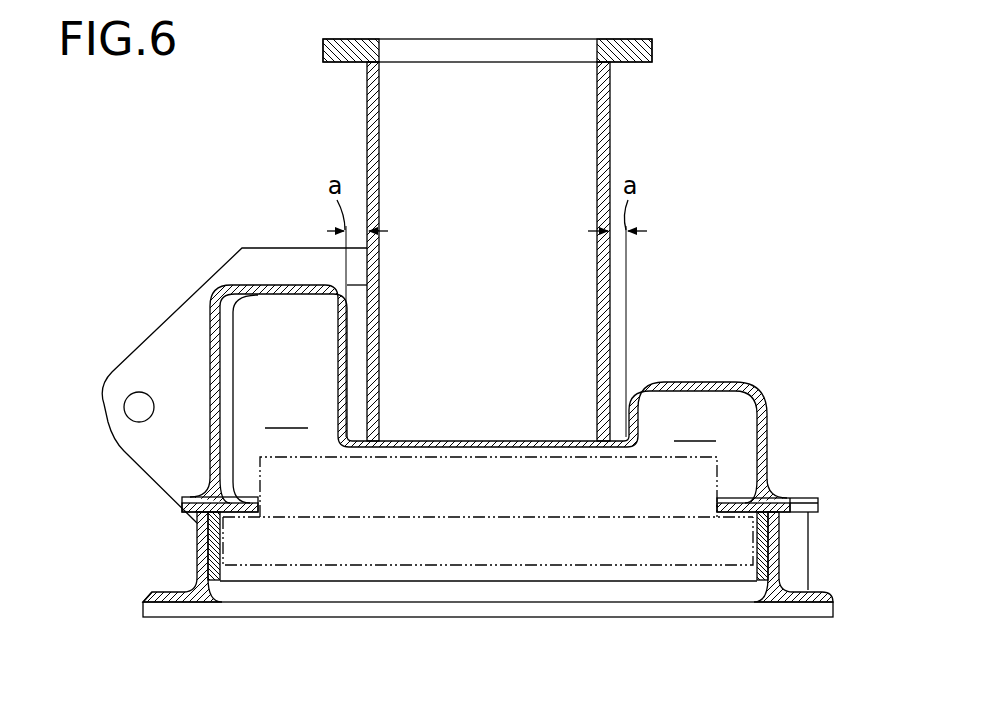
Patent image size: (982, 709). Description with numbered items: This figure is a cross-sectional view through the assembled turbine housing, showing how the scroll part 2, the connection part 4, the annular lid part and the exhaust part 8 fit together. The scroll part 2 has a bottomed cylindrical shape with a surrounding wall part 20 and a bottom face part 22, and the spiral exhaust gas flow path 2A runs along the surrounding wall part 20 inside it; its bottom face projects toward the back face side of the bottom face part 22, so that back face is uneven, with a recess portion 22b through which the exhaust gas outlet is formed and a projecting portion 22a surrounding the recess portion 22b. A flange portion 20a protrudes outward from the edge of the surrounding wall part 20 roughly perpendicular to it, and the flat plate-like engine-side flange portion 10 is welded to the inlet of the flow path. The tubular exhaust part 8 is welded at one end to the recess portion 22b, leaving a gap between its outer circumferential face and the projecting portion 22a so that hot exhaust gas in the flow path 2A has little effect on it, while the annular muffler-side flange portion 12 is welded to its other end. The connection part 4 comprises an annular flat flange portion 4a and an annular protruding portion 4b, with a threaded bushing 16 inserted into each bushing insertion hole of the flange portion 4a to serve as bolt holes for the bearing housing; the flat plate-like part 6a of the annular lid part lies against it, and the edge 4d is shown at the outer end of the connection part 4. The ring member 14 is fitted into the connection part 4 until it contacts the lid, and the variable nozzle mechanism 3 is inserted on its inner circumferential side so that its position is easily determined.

The scroll part 2 is at (479, 339).
The exhaust gas flow path 2A is at (490, 421).
The variable nozzle mechanism 3 is at (517, 572).
The connection part 4 is at (470, 599).
The flange portion 4a is at (188, 597).
The protruding portion 4b is at (200, 557).
The frame end edge 4d is at (145, 607).
The flat plate-like part 6a is at (790, 517).
The exhaust part 8 is at (443, 240).
The engine-side flange portion 10 is at (177, 325).
The muffler-side flange portion 12 is at (323, 46).
The ring member 14 is at (220, 540).
The threaded bushing 16 is at (790, 550).
The surrounding wall part 20 is at (212, 363).
The flange portion 20a is at (192, 497).
The bottom face part 22 is at (318, 214).
The projecting portion 22a is at (270, 285).
The recess portion 22b is at (357, 438).